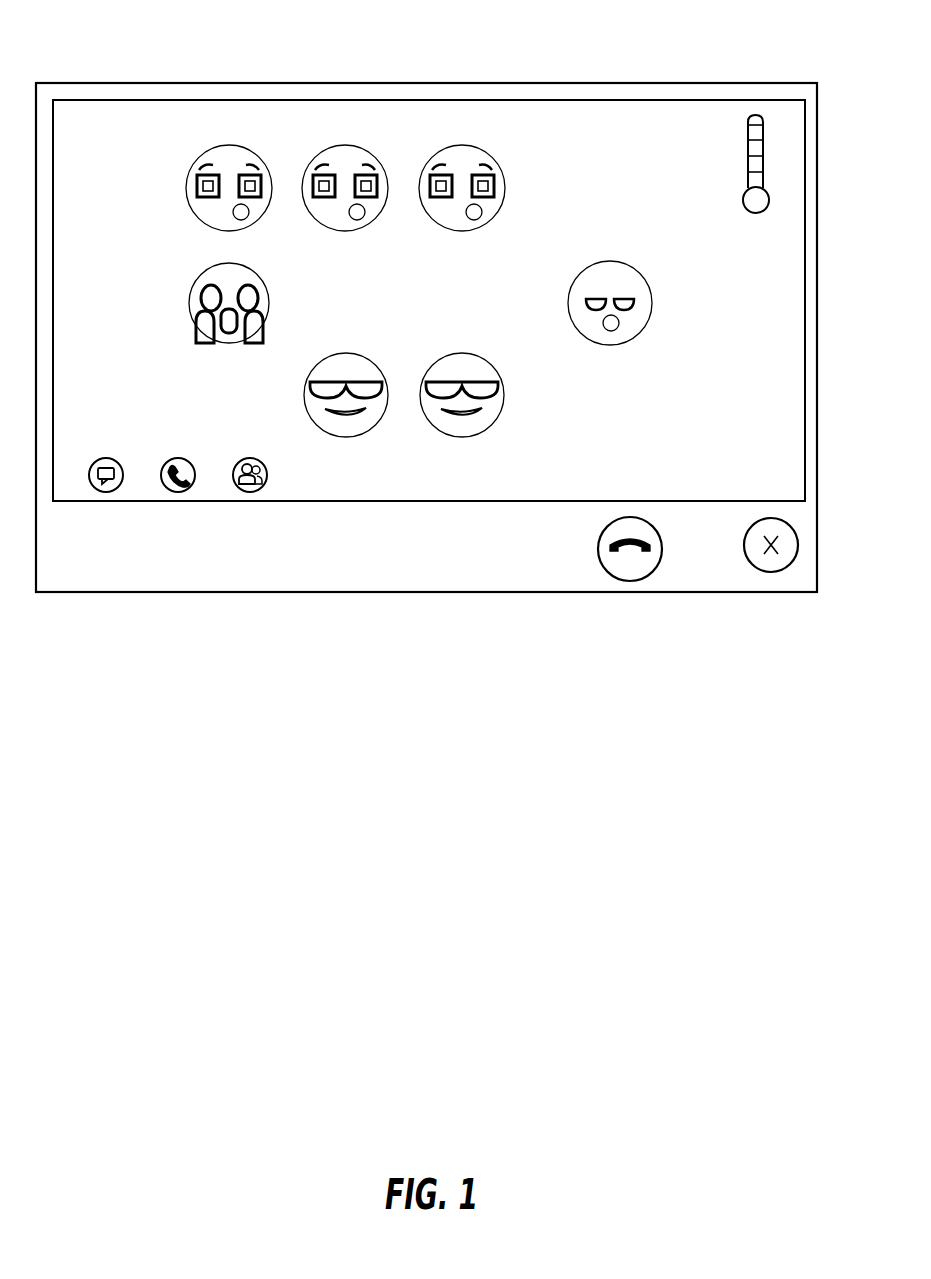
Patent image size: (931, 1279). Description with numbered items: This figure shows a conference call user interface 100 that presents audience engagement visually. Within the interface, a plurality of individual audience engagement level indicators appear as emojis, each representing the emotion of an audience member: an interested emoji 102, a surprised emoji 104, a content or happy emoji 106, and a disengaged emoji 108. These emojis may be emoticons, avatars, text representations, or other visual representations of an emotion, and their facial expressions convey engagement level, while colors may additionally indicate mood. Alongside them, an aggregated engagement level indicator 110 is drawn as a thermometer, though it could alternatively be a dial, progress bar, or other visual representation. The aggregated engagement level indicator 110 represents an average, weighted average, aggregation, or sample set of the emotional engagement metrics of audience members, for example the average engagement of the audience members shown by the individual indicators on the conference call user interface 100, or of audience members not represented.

The conference call user interface 100 is at (710, 33).
The interested emoji 102 is at (213, 146).
The surprised emoji 104 is at (196, 280).
The content or happy emoji 106 is at (308, 411).
The disengaged emoji 108 is at (567, 291).
The aggregated engagement level indicator 110 is at (744, 197).